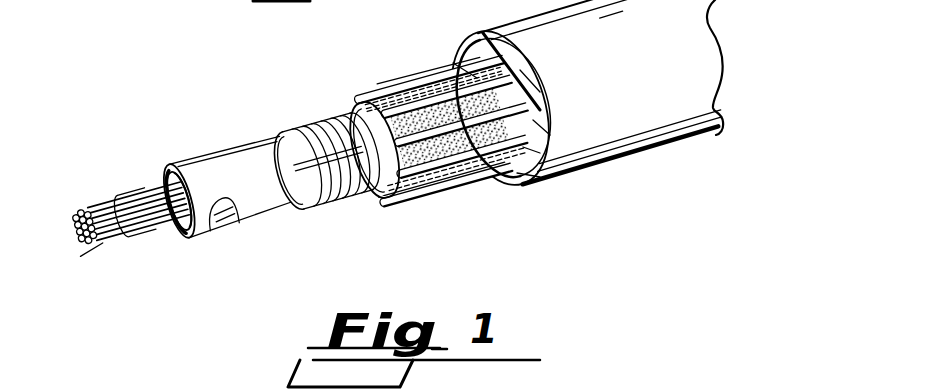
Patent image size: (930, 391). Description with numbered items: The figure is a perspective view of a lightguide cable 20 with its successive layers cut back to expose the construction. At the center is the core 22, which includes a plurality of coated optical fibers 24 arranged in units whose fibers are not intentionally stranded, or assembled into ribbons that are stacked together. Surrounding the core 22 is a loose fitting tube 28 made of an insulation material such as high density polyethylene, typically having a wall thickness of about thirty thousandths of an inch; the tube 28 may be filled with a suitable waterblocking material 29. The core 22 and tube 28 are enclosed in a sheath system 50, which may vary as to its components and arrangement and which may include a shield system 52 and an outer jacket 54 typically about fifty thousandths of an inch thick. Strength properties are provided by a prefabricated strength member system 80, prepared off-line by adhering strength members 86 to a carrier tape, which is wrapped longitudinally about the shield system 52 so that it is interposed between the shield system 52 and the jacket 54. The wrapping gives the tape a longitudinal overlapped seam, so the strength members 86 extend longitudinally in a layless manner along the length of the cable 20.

The lightguide cable 20 is at (626, 187).
The core 22 is at (127, 247).
The coated optical fibers 24 is at (93, 209).
The tube 28 is at (217, 157).
The waterblocking material 29 is at (236, 232).
The sheath system 50 is at (332, 86).
The shield system 52 is at (357, 210).
The outer jacket 54 is at (528, 178).
The prefabricated strength member system 80 is at (387, 84).
The strength members 86 is at (421, 80).